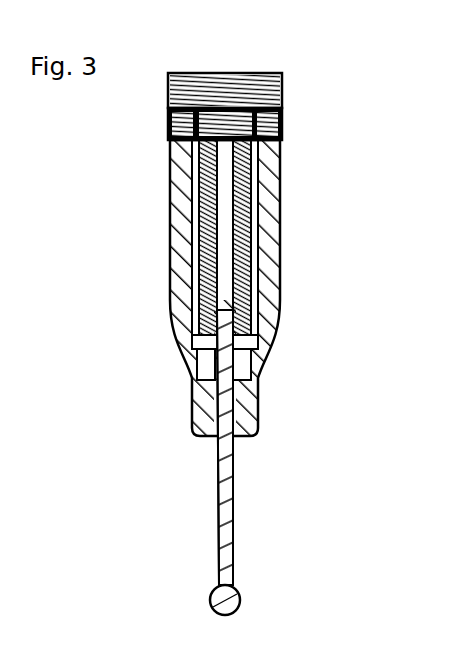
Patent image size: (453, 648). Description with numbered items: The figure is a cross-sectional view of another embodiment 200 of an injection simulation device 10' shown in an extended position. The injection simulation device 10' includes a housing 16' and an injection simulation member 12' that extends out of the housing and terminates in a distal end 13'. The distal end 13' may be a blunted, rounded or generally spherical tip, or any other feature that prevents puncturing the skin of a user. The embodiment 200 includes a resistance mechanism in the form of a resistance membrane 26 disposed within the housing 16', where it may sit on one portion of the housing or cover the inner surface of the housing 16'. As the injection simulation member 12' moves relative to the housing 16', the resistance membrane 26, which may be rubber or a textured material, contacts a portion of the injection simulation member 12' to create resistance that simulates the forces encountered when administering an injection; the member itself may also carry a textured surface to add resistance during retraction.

The embodiment of injection simulation device 200 is at (333, 60).
The injection simulation device 10' is at (217, 377).
The housing 16' is at (290, 290).
The resistance membrane 26 is at (246, 256).
The injection simulation member 12' is at (285, 447).
The distal end 13' is at (292, 590).